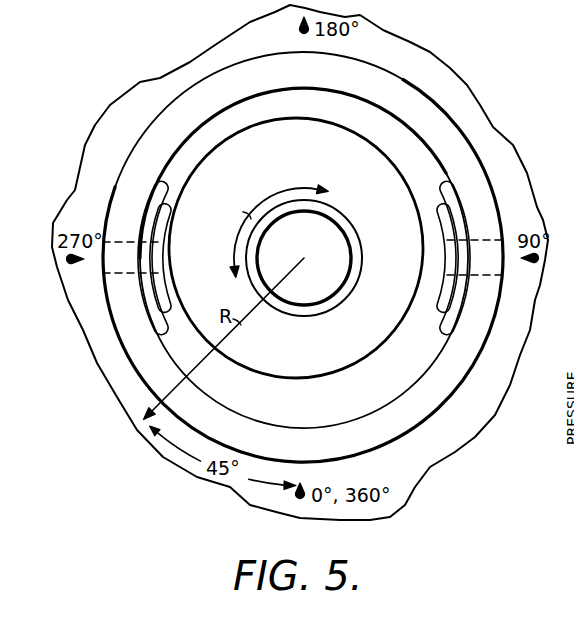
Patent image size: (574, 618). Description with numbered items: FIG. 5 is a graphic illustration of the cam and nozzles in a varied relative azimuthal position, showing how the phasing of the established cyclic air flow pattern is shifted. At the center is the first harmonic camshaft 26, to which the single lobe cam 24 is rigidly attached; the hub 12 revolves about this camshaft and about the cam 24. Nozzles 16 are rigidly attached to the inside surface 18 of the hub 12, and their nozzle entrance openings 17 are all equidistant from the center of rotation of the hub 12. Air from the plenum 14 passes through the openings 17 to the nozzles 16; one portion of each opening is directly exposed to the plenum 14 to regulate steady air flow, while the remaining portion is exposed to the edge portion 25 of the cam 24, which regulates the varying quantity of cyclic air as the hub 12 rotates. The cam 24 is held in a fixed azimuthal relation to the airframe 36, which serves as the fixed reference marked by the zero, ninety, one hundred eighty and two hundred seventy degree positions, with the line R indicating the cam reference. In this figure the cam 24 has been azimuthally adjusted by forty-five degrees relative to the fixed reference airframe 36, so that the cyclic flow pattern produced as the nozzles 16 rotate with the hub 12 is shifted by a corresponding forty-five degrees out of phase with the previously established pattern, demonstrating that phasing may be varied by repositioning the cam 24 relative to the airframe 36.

The hub 12 is at (365, 443).
The plenum 14 is at (299, 411).
The nozzle 16 is at (452, 318).
The nozzle entrance opening 17 is at (452, 272).
The inside surface of the hub 18 is at (440, 352).
The cam 24 is at (341, 166).
The edge portion of the cam 25 is at (389, 164).
The first harmonic camshaft 26 is at (347, 226).
The airframe 36 is at (508, 160).